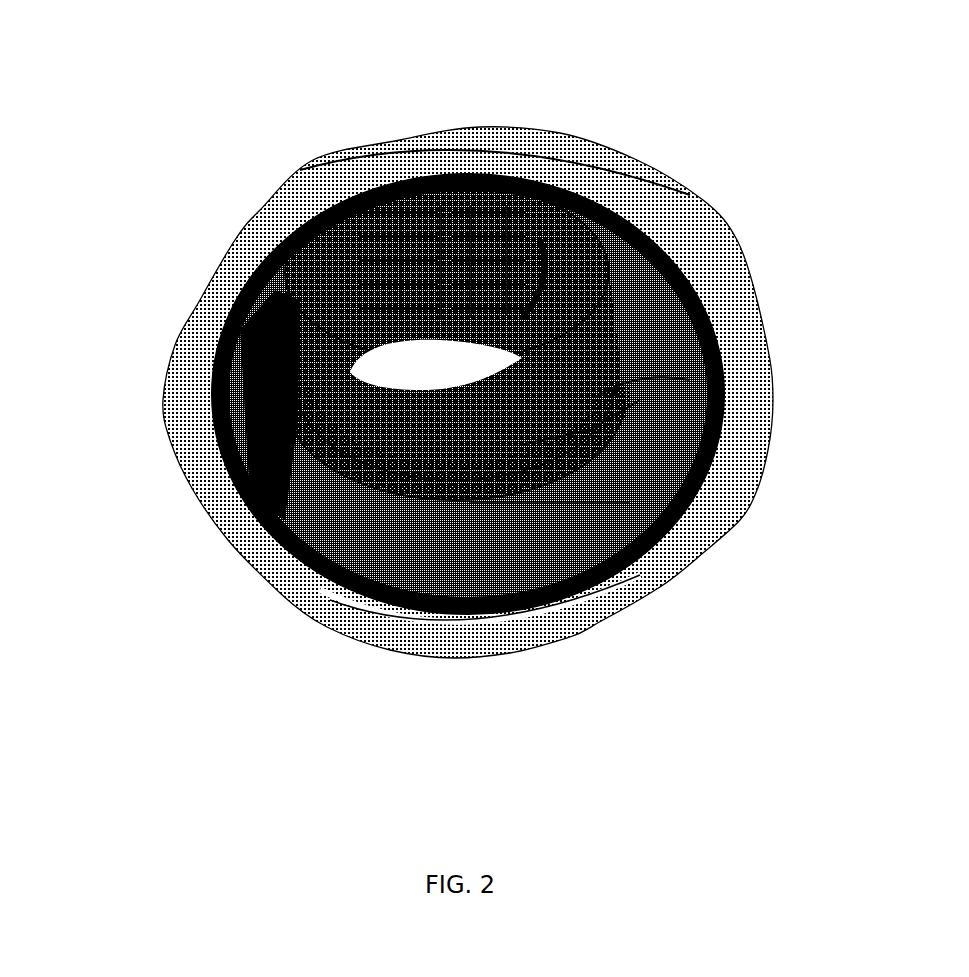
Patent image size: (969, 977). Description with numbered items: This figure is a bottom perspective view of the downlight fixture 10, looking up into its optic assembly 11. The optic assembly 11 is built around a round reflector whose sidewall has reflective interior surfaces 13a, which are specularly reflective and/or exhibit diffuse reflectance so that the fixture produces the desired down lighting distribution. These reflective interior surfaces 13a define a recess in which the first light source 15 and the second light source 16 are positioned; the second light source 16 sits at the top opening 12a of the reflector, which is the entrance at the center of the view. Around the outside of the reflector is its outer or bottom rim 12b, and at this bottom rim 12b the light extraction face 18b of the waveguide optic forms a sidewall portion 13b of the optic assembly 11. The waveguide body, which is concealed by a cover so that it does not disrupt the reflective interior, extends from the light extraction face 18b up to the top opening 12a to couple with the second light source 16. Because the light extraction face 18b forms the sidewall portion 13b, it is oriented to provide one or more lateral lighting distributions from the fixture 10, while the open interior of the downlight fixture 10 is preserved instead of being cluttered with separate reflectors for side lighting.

The downlight fixture 10 is at (240, 97).
The optic assembly 11 is at (722, 226).
The top opening 12a is at (530, 416).
The bottom rim 12b is at (186, 515).
The interior surfaces 13a is at (645, 381).
The sidewall portion 13b is at (457, 500).
The first light source 15 is at (418, 215).
The second light source 16 is at (415, 318).
The light extraction face 18b is at (556, 592).